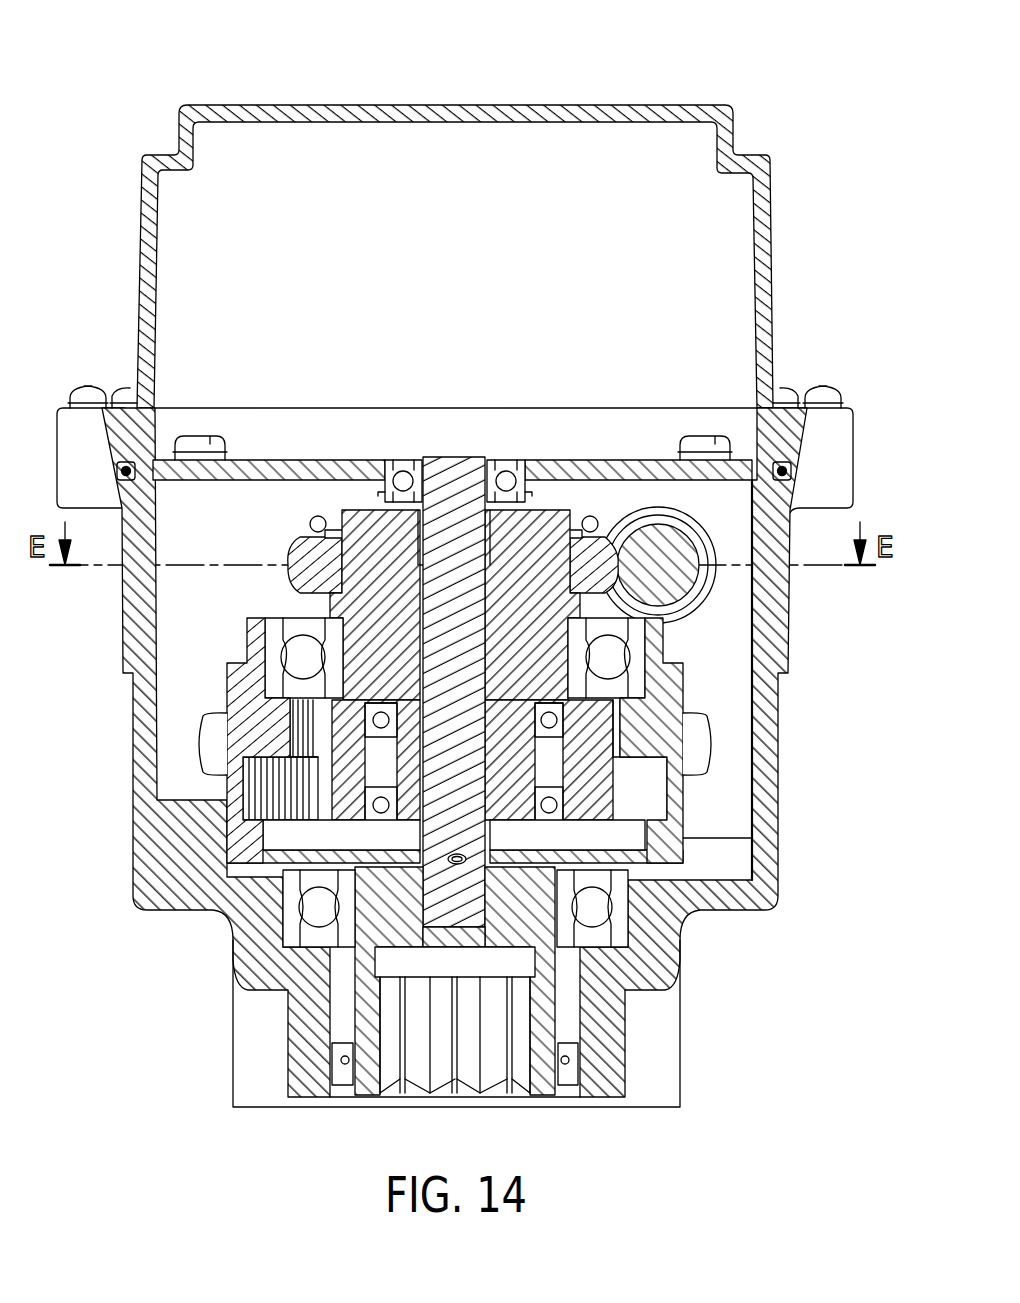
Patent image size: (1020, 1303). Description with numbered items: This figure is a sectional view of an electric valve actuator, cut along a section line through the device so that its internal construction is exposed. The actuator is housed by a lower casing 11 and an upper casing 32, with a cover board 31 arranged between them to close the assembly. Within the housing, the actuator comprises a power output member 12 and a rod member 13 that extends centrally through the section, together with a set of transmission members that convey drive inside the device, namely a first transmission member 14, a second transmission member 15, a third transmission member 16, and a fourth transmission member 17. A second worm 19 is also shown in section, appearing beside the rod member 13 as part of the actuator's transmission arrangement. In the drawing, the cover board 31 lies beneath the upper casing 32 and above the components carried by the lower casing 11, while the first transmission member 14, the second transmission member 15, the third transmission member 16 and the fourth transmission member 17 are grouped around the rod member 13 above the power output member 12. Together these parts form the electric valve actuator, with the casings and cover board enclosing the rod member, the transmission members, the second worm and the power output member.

The lower casing 11 is at (135, 905).
The power output member 12 is at (520, 917).
The rod member 13 is at (456, 497).
The first transmission member 14 is at (253, 730).
The second transmission member 15 is at (532, 650).
The third transmission member 16 is at (590, 767).
The fourth transmission member 17 is at (300, 545).
The second worm 19 is at (690, 603).
The cover board 31 is at (280, 470).
The upper casing 32 is at (655, 115).